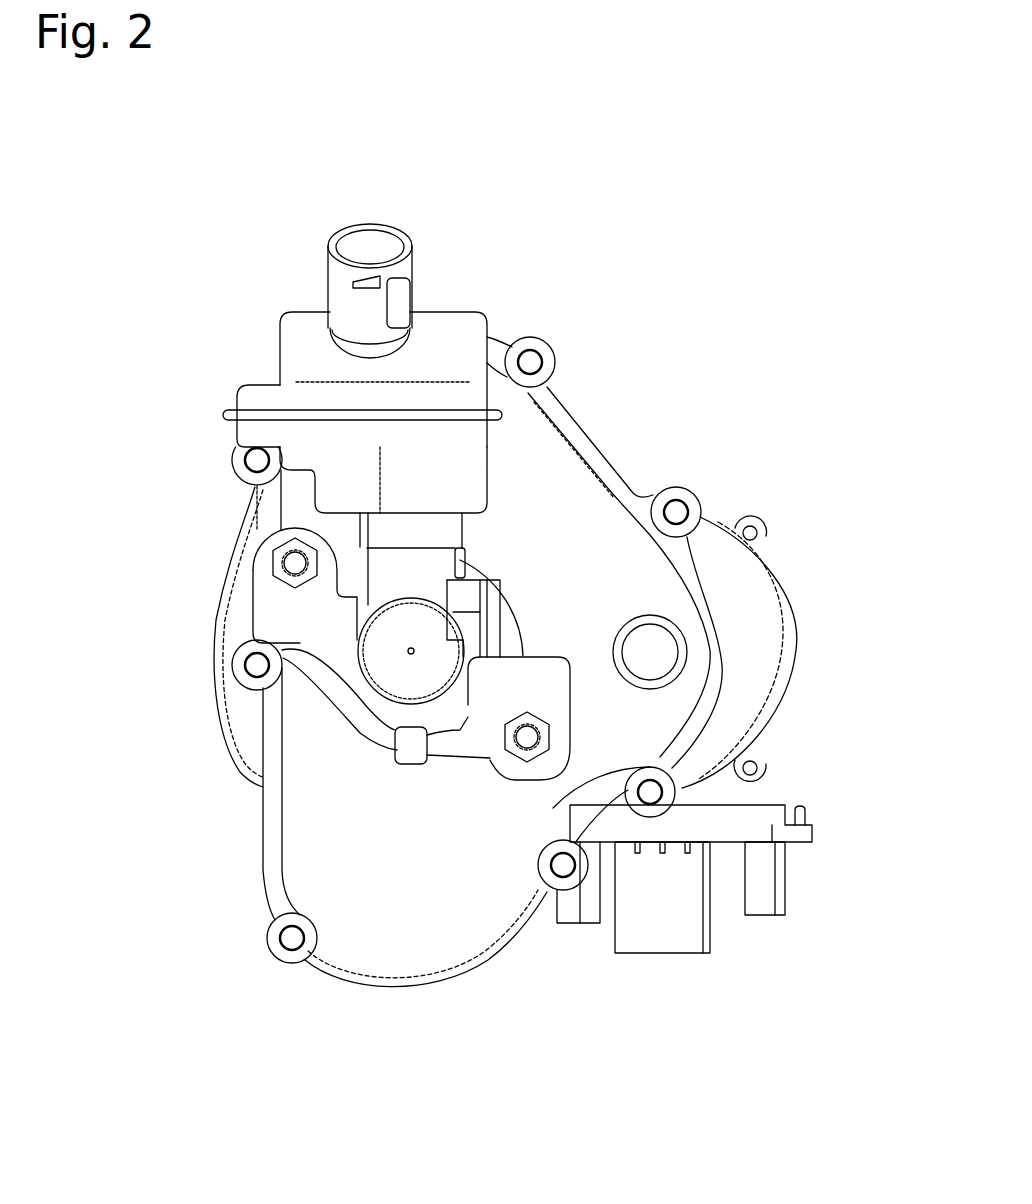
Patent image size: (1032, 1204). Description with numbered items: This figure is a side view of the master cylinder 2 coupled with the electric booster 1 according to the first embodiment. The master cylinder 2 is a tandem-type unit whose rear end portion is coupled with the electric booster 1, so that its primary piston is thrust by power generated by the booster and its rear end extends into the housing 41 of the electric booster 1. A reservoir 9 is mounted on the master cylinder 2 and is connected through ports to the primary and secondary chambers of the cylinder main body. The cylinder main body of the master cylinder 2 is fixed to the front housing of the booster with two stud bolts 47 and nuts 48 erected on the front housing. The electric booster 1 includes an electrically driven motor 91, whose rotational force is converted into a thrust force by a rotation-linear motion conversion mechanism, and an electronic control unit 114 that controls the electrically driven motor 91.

The electric booster 1 is at (632, 228).
The master cylinder 2 is at (377, 697).
The reservoir 9 is at (287, 312).
The housing 41 is at (595, 447).
The stud bolts 47 is at (280, 566).
The nuts 48 is at (295, 562).
The electrically driven motor 91 is at (785, 587).
The electronic control unit 114 is at (788, 797).